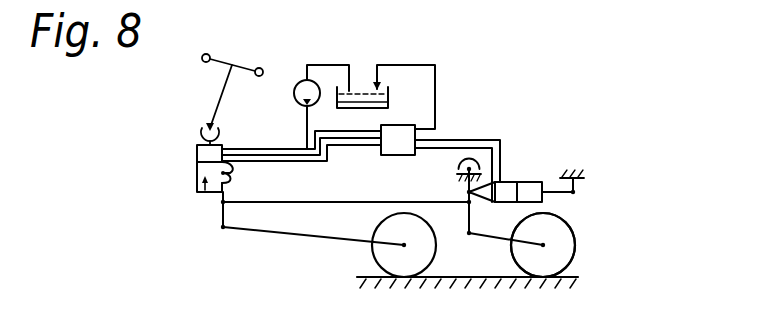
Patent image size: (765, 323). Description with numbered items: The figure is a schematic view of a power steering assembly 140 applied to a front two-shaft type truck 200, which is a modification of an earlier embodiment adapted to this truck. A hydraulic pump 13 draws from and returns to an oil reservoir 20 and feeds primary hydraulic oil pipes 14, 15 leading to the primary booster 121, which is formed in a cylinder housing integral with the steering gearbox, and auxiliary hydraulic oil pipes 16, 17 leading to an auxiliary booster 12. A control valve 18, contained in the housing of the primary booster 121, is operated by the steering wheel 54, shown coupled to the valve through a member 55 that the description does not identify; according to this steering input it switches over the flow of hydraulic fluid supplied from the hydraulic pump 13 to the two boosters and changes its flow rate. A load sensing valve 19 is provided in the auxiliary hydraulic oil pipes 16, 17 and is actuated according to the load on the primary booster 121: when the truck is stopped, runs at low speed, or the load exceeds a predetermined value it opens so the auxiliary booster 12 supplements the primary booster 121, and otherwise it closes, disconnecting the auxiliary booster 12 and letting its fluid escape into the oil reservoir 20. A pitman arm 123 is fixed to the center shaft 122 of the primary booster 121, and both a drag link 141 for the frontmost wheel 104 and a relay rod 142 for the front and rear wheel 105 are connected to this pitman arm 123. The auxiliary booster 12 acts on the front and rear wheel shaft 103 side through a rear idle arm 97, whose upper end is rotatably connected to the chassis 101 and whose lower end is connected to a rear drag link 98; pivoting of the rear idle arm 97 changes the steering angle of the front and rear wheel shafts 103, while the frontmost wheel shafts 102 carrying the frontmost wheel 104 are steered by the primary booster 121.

The power steering assembly 140 is at (387, 21).
The hydraulic pump 13 is at (296, 83).
The primary hydraulic oil pipe 14 is at (304, 123).
The primary hydraulic oil pipe 15 is at (437, 91).
The oil reservoir 20 is at (390, 100).
The load sensing valve 19 is at (398, 140).
The auxiliary hydraulic oil pipe 16 is at (451, 138).
The auxiliary hydraulic oil pipe 17 is at (474, 146).
The steering wheel 54 is at (212, 57).
The rod 55 is at (217, 103).
The control valve 18 is at (206, 169).
The primary booster 121 is at (201, 193).
The center shaft 122 is at (231, 176).
The pitman arm 123 is at (222, 227).
The drag link 141 is at (300, 235).
The relay rod 142 is at (356, 203).
The auxiliary booster 12 is at (517, 181).
The chassis 101 is at (457, 167).
The front two-shaft type truck 200 is at (562, 159).
The rear idle arm 97 is at (469, 220).
The rear drag link 98 is at (496, 238).
The frontmost wheel shafts 102 is at (395, 276).
The front and rear wheel shafts 103 is at (544, 245).
The front and rear wheel 105 is at (574, 257).
The frontmost wheel 104 is at (437, 277).